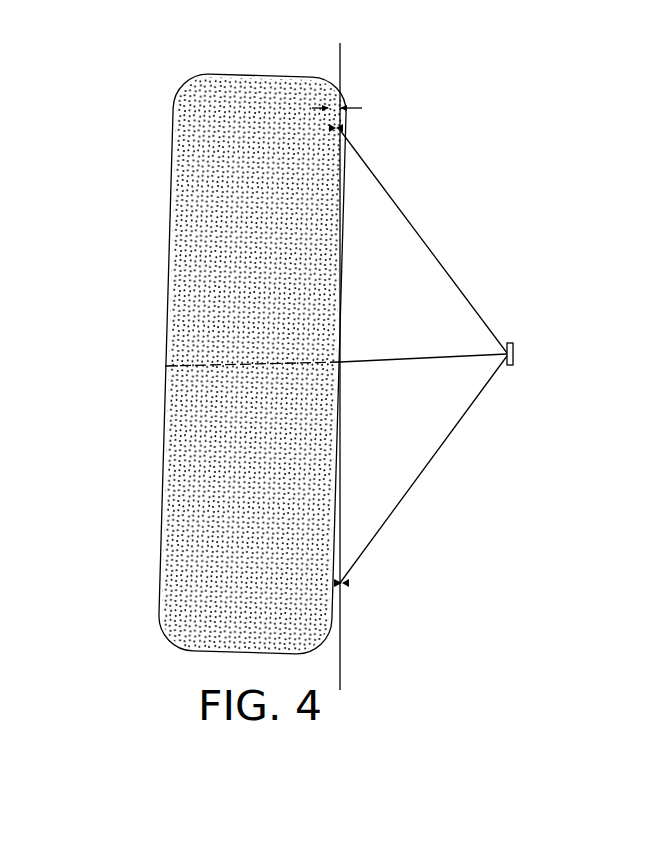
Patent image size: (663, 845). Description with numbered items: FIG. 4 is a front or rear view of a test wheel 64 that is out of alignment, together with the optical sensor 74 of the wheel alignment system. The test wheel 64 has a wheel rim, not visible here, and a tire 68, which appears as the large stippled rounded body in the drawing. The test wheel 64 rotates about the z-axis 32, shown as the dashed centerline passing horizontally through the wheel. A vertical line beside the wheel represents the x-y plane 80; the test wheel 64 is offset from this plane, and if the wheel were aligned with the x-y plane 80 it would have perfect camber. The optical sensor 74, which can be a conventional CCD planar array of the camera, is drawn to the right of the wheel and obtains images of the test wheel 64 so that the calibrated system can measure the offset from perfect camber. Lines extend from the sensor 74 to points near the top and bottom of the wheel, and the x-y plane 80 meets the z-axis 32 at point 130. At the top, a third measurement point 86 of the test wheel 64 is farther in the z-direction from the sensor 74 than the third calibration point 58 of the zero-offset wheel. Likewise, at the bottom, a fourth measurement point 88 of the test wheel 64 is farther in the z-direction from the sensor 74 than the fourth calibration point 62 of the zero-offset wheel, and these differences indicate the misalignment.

The test wheel 64 is at (217, 329).
The tire 68 is at (262, 76).
The z-axis 32 is at (162, 366).
The x-y plane 80 is at (341, 655).
The optical sensor 74 is at (514, 354).
The central point on reference plane 130 is at (341, 364).
The third calibration point 58 is at (344, 128).
The third measurement point 86 is at (344, 121).
The fourth calibration point 62 is at (342, 588).
The fourth measurement point 88 is at (346, 582).